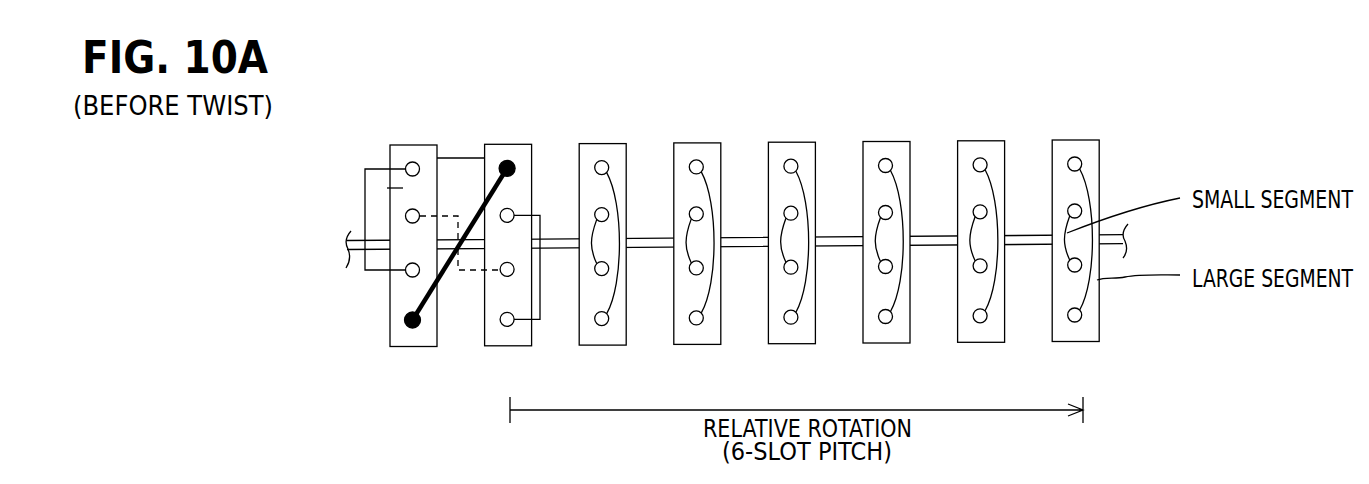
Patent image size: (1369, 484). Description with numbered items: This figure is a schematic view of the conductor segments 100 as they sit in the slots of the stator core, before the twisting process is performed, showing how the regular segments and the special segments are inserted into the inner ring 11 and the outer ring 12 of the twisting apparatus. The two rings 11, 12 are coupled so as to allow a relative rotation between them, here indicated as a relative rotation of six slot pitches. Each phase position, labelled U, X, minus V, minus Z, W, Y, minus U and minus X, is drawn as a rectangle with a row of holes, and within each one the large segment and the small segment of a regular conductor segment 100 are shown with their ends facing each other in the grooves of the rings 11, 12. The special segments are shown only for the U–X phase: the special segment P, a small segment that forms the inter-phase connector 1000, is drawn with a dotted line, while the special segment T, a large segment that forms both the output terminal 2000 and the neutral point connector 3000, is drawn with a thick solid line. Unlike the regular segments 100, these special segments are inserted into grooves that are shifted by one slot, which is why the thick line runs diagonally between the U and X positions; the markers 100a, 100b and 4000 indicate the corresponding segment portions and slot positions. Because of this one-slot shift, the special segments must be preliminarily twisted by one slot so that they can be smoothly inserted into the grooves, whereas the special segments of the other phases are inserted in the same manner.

The conductor segment 100 is at (774, 246).
The segment in-slot portion (first) 100a is at (387, 188).
The segment in-slot portion (second) 100b is at (437, 158).
The inter-phase connector 1000 is at (470, 270).
The output terminal 2000 is at (430, 293).
The neutral point connector 3000 is at (365, 200).
The slot position marker 4000 is at (543, 287).
The inner ring 11 is at (1127, 247).
The outer ring 12 is at (1119, 177).